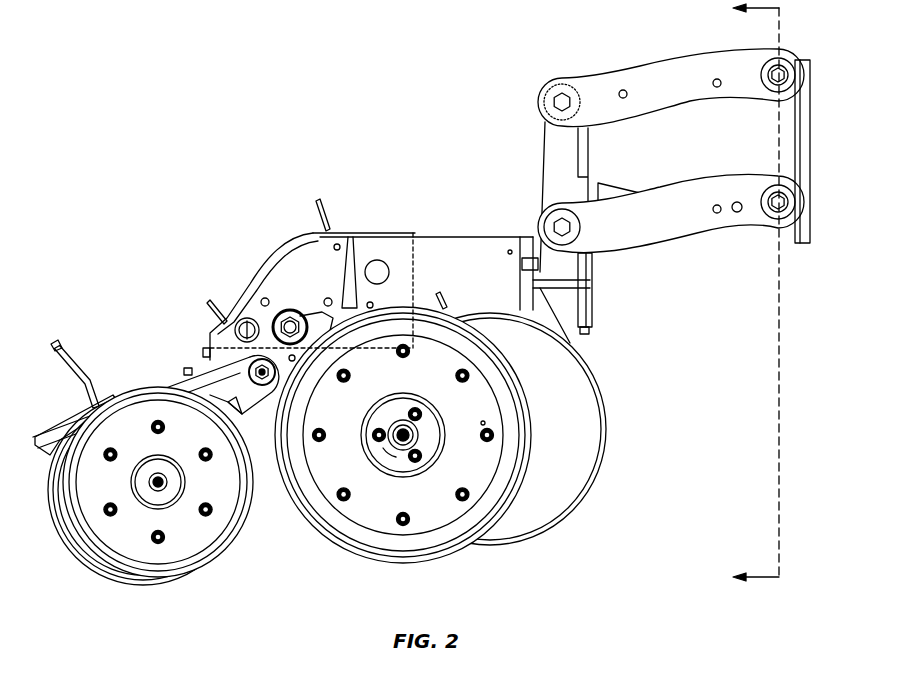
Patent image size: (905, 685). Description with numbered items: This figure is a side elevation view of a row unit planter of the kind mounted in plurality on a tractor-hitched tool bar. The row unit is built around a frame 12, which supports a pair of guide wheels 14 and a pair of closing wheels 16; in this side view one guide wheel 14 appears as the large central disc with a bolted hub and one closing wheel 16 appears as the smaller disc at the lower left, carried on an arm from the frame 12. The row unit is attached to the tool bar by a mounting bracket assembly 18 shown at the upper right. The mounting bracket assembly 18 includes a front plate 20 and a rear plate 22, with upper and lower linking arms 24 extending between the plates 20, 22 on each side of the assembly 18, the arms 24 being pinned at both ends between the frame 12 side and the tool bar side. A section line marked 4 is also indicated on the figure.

The frame 12 is at (484, 236).
The gauge wheel 14 is at (440, 552).
The closing wheel 16 is at (182, 560).
The parallel linkage 18 is at (650, 161).
The mounting bracket 20 is at (766, 134).
The link support member 22 is at (541, 163).
The parallel link arms 24 is at (695, 57).
The section line 4- 4 is at (744, 295).